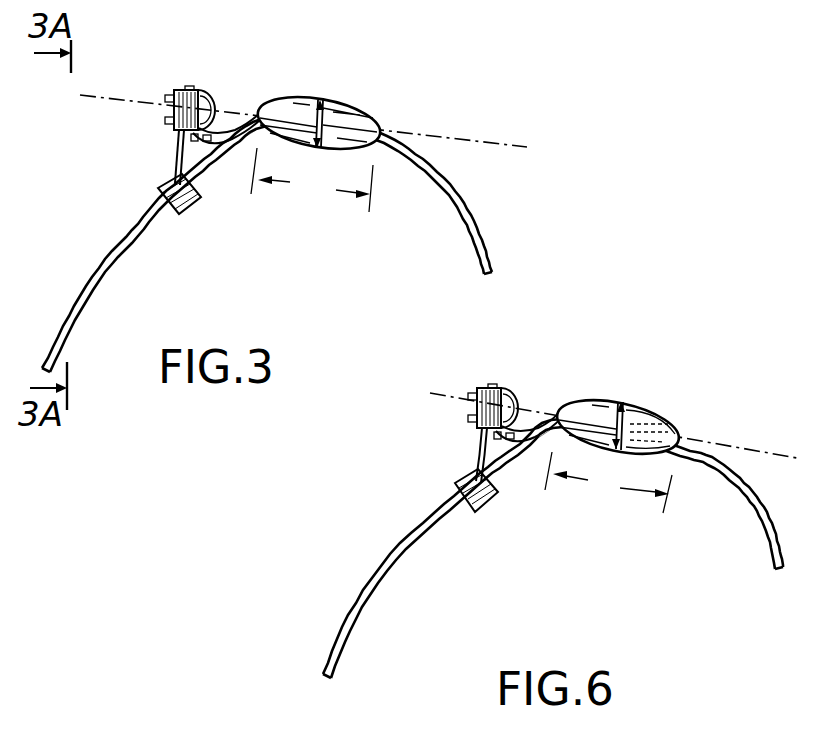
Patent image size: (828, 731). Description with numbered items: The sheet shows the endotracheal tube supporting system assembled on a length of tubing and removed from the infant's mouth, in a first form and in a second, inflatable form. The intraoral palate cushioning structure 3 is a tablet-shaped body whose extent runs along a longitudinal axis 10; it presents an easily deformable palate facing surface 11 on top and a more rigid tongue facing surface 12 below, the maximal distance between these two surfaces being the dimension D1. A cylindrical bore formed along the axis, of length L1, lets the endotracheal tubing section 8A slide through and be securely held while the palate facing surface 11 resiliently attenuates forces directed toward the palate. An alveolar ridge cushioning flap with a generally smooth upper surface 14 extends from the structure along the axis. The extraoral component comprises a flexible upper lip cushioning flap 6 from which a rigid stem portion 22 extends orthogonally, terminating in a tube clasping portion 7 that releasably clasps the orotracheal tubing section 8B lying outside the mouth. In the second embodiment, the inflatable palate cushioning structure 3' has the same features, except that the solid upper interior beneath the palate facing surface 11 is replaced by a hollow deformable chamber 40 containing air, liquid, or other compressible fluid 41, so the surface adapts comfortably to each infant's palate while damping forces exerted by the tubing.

In FIG. 3, the palate cushioning structure 3 is at (319, 94).
In FIG. 6, the inflatable palate cushioning structure 3' is at (617, 404).
In FIG. 3, the flexible upper lip cushioning flap 6 is at (206, 96).
In FIG. 6, the flexible upper lip cushioning flap 6 is at (508, 395).
In FIG. 3, the tube clasping portion 7 is at (158, 188).
In FIG. 6, the tube clasping portion 7 is at (456, 487).
In FIG. 3, the endotracheal tubing section 8A is at (485, 221).
In FIG. 6, the endotracheal tubing section 8A is at (764, 532).
In FIG. 3, the orotracheal tubing section 8B is at (98, 270).
In FIG. 6, the orotracheal tubing section 8B is at (393, 558).
In FIG. 3, the longitudinal axis 10 is at (494, 142).
In FIG. 3, the palate facing surface 11 is at (308, 103).
In FIG. 6, the palate facing surface 11 is at (628, 406).
In FIG. 3, the tongue facing surface 12 is at (263, 147).
In FIG. 6, the tongue facing surface 12 is at (561, 448).
In FIG. 3, the upper surface 14 is at (235, 122).
In FIG. 6, the upper surface 14 is at (547, 420).
In FIG. 3, the rigid stem portion 22 is at (177, 160).
In FIG. 6, the rigid stem portion 22 is at (480, 468).
In FIG. 6, the hollow deformable chamber 40 is at (652, 414).
In FIG. 6, the compressible fluid 41 is at (679, 427).
In FIG. 3, the maximal distance D1 is at (322, 118).
In FIG. 6, the maximal distance D1 is at (620, 445).
In FIG. 3, the bore length L1 is at (312, 180).
In FIG. 6, the bore length L1 is at (608, 482).